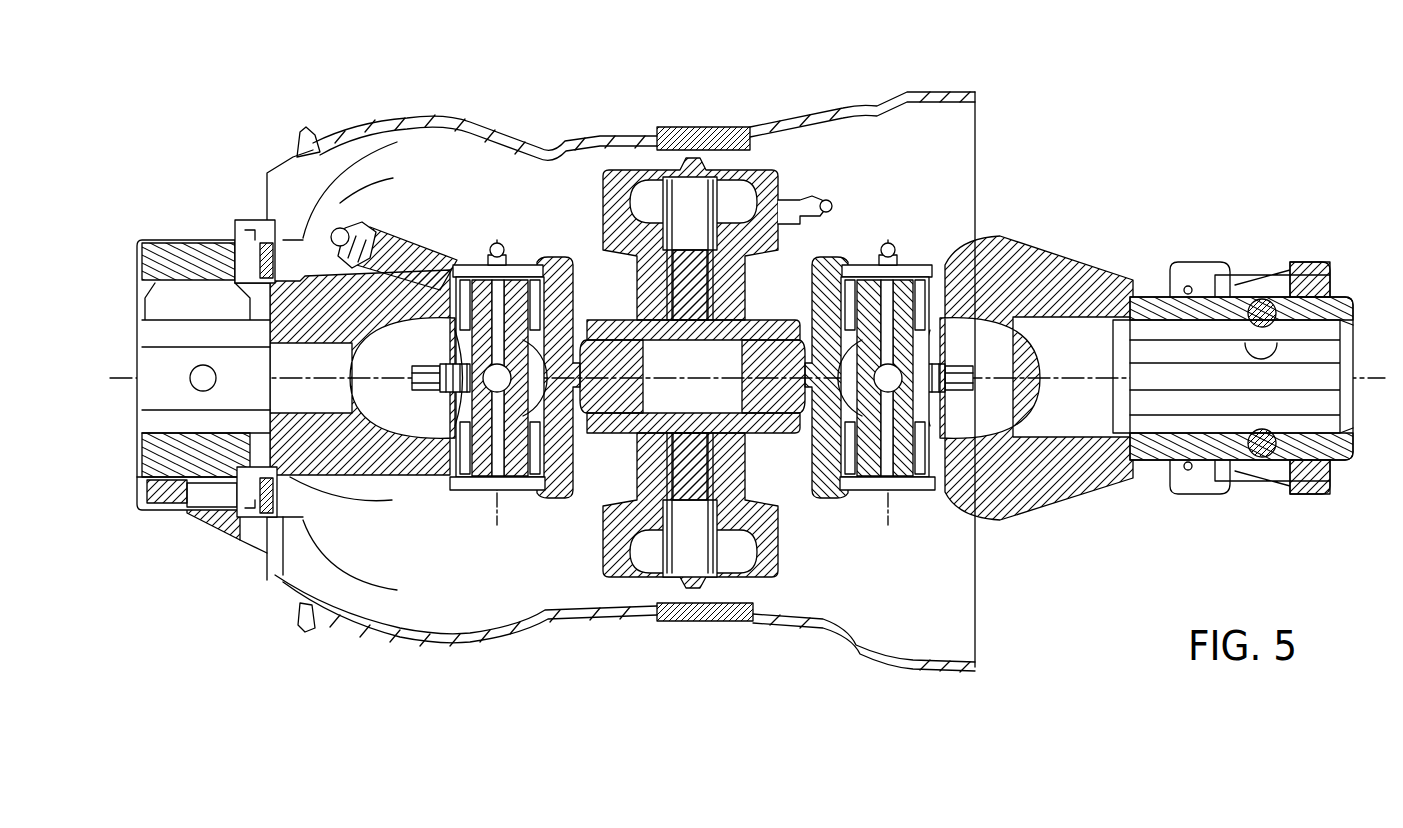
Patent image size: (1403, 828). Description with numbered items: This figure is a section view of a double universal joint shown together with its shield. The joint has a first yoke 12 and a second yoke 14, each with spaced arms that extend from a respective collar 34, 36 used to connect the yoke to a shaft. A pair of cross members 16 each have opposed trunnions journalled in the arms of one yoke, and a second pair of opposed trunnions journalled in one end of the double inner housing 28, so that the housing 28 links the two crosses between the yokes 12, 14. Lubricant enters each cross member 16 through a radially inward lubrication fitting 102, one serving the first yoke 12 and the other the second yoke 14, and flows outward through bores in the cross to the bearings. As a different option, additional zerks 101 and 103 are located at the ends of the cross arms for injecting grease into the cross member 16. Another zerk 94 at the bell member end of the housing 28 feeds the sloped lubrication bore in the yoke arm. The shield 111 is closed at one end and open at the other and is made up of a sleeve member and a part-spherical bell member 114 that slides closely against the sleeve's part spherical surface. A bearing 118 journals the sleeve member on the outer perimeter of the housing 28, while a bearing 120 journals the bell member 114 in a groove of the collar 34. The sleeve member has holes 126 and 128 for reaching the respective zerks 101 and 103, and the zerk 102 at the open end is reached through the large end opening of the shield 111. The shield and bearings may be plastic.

The first yoke 12 is at (400, 497).
The second yoke 14 is at (1030, 497).
The cross member 16 is at (450, 352).
The double inner housing 28 is at (783, 170).
The collar 34 is at (150, 290).
The collar 36 is at (1337, 297).
The lubrication fitting 94 is at (348, 225).
The zerk 101 is at (503, 250).
The lubrication fitting 102 is at (416, 394).
The zerk 103 is at (891, 247).
The shield 111 is at (790, 124).
The bell member 114 is at (287, 600).
The bearing 118 is at (717, 627).
The bearing 120 is at (290, 496).
The hole 126 is at (520, 138).
The hole 128 is at (917, 92).